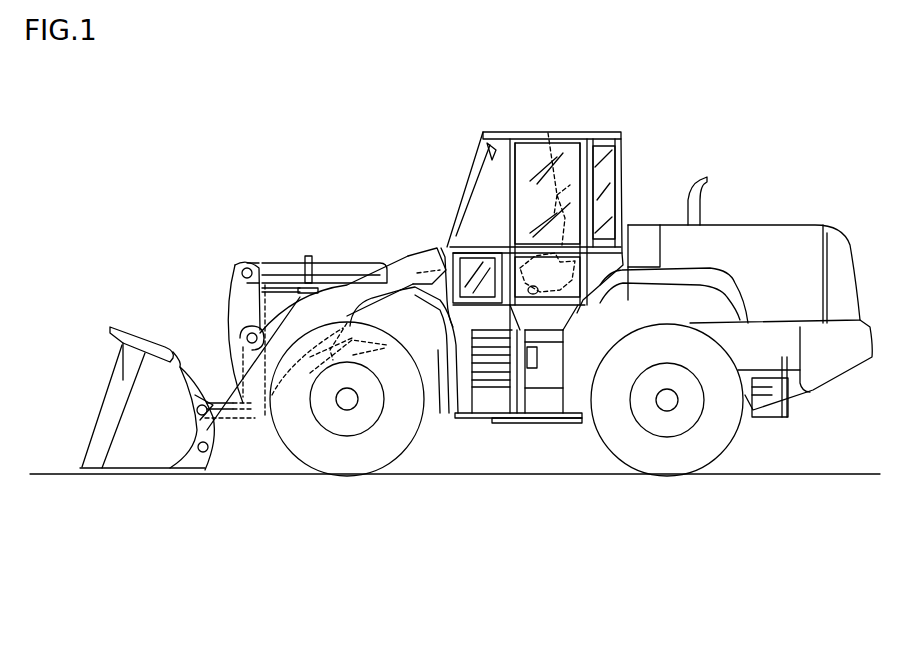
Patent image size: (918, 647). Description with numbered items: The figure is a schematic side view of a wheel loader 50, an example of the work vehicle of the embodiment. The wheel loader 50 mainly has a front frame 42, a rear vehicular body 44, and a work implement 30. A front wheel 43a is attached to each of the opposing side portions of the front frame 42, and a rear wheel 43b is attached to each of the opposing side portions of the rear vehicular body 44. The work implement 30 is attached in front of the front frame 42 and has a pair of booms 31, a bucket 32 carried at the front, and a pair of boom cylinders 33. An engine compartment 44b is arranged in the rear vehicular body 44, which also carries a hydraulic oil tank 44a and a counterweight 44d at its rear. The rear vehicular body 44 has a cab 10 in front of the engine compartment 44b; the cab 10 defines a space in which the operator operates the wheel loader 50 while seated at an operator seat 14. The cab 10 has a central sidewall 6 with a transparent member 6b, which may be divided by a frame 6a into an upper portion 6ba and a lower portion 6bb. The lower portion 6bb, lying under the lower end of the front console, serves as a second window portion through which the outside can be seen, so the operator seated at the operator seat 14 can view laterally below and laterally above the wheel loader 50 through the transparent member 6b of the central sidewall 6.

The wheel loader 50 is at (723, 94).
The cab 10 is at (574, 116).
The operator seat 14 is at (548, 133).
The central sidewall 6 is at (358, 100).
The frame 6a is at (510, 165).
The transparent member 6b is at (400, 140).
The upper portion 6ba is at (540, 200).
The lower portion 6bb is at (540, 262).
The work implement 30 is at (212, 313).
The boom 31 is at (285, 327).
The bucket 32 is at (140, 428).
The boom cylinder 33 is at (402, 340).
The front frame 42 is at (447, 397).
The front wheel 43a is at (350, 455).
The rear wheel 43b is at (670, 456).
The rear vehicular body 44 is at (752, 238).
The hydraulic oil tank 44a is at (643, 231).
The engine compartment 44b is at (800, 259).
The counterweight 44d is at (835, 363).